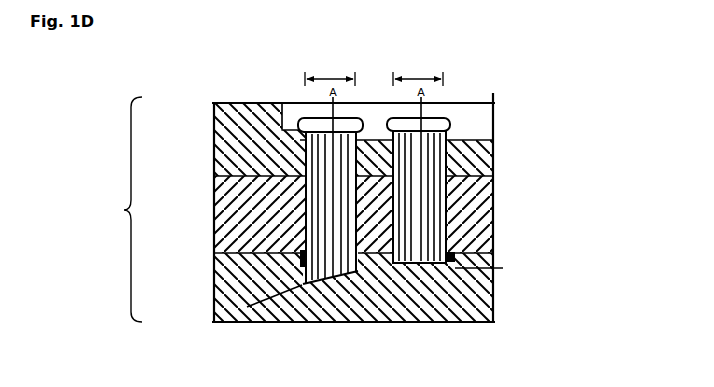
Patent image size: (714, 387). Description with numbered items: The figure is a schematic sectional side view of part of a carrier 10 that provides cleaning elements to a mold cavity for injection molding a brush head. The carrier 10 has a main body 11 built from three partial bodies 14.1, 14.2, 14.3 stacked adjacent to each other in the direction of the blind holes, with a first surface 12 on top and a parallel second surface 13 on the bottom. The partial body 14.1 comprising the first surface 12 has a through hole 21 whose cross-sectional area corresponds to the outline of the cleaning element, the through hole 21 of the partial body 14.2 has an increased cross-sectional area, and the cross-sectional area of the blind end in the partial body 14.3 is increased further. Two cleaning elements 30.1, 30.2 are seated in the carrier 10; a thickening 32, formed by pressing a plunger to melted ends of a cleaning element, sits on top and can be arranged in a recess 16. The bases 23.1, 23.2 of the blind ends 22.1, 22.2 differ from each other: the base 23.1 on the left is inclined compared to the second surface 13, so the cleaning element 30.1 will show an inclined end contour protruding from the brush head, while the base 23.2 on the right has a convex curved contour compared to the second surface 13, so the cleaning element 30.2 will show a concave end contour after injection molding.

The carrier 10 is at (243, 84).
The main body 11 is at (117, 209).
The first surface 12 is at (467, 137).
The second surface 13 is at (425, 328).
The partial body 14.1 is at (478, 160).
The partial body 14.2 is at (468, 225).
The partial body 14.3 is at (445, 298).
The recess 16 is at (288, 112).
The through hole 21 is at (303, 228).
The blind end 22.1 is at (300, 270).
The blind end 22.2 is at (452, 258).
The base 23.1 is at (322, 283).
The base 23.2 is at (406, 267).
The cleaning element 30.1 is at (318, 186).
The cleaning element 30.2 is at (423, 188).
The thickening 32 is at (297, 125).